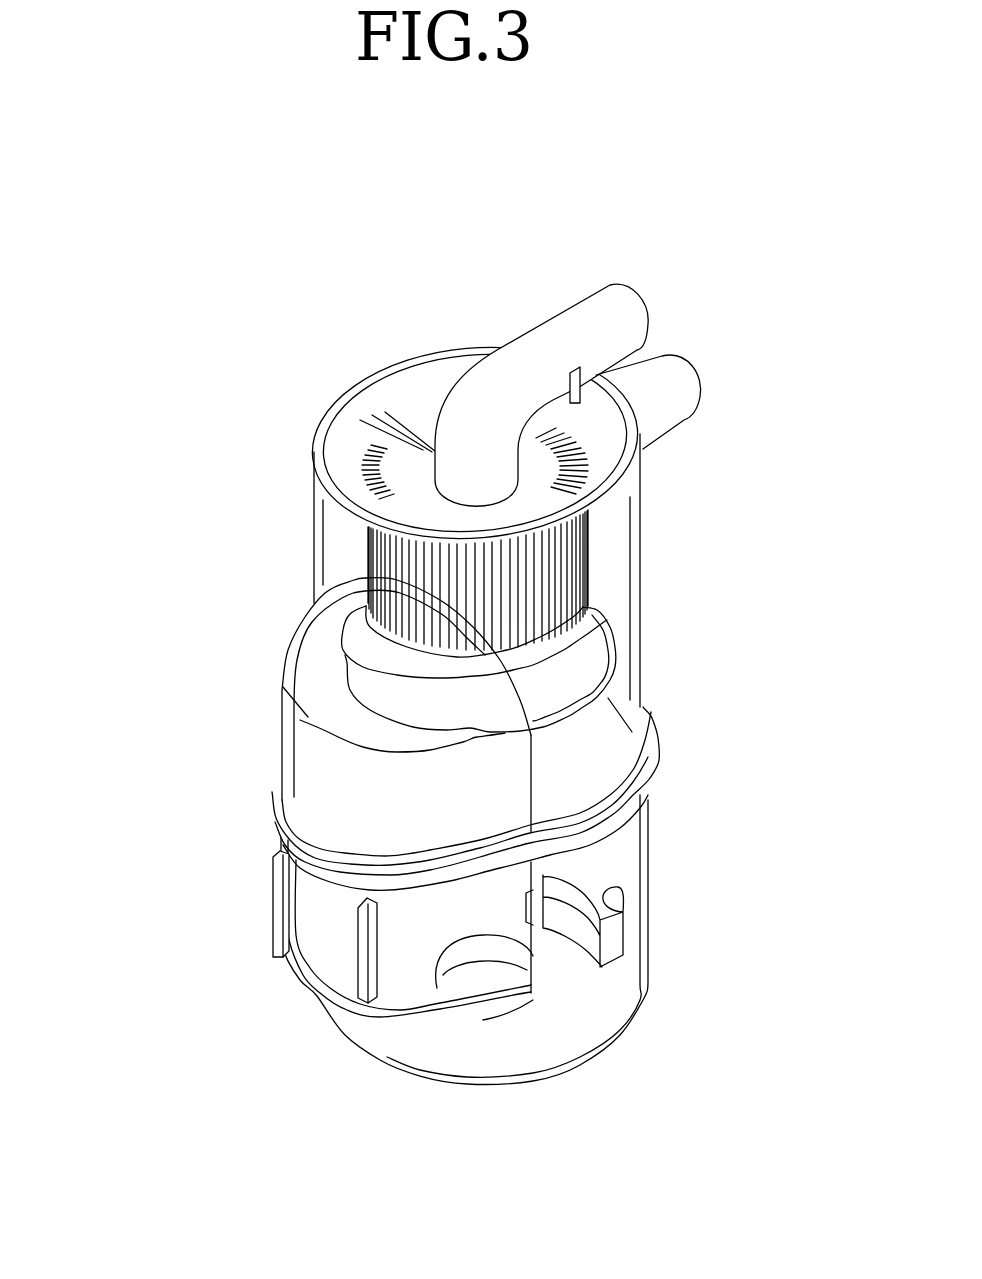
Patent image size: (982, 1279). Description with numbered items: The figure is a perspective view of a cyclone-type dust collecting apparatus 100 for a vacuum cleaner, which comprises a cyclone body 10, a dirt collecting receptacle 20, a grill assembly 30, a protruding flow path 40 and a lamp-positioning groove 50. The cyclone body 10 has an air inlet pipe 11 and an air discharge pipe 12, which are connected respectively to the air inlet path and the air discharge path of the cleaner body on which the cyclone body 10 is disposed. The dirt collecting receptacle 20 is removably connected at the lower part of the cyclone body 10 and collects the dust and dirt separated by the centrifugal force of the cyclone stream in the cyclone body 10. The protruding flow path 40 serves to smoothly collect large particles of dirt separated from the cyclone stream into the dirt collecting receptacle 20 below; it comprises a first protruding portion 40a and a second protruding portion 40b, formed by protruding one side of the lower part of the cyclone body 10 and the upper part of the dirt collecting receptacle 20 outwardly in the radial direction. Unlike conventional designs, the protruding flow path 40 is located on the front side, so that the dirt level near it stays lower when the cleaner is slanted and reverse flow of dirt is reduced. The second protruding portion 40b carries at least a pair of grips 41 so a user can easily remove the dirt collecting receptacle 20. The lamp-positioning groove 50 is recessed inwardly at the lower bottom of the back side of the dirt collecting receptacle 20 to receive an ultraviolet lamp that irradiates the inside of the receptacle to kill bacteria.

The cyclone-type dust collecting apparatus 100 is at (364, 228).
The cyclone body 10 is at (314, 546).
The air inlet pipe 11 is at (688, 388).
The air discharge pipe 12 is at (627, 302).
The dirt collecting receptacle 20 is at (649, 970).
The grill assembly 30 is at (597, 556).
The protruding flow path 40 is at (110, 743).
The first protruding portion 40a is at (330, 787).
The second protruding portion 40b is at (320, 903).
The grips 41 is at (367, 988).
The lamp-positioning groove 50 is at (603, 907).